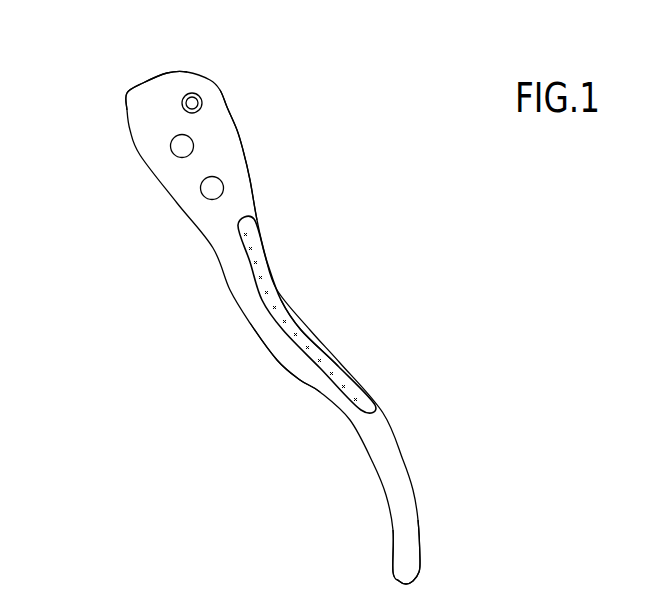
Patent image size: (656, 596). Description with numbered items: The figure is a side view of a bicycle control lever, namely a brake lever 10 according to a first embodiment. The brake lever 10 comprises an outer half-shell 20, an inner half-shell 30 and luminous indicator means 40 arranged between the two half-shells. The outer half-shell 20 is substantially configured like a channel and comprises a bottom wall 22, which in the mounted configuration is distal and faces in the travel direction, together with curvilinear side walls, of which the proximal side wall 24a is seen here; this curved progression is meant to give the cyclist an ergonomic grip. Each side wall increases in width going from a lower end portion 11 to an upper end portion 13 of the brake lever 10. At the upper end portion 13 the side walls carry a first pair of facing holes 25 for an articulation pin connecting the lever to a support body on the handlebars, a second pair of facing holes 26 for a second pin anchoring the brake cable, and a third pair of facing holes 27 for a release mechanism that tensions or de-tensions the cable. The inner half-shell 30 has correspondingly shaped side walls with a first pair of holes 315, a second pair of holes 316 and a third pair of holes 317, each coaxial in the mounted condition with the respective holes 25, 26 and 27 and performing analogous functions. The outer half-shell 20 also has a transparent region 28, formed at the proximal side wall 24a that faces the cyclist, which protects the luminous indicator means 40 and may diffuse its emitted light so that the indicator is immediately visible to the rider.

The brake lever 10 is at (508, 252).
The lower end portion 11 is at (431, 555).
The upper end portion 13 is at (116, 86).
The outer half-shell 20 is at (250, 123).
The bottom wall 22 is at (300, 377).
The proximal side wall 24a is at (250, 176).
The first pair of facing holes 25 is at (149, 214).
The first pair of facing holes 315 is at (202, 196).
The second pair of facing holes 26 is at (240, 79).
The second pair of facing holes 316 is at (201, 100).
The third pair of facing holes 27 is at (116, 148).
The third pair of facing holes 317 is at (171, 156).
The transparent region 28 is at (343, 360).
The inner half-shell 30 is at (153, 72).
The luminous indicator means 40 is at (295, 303).